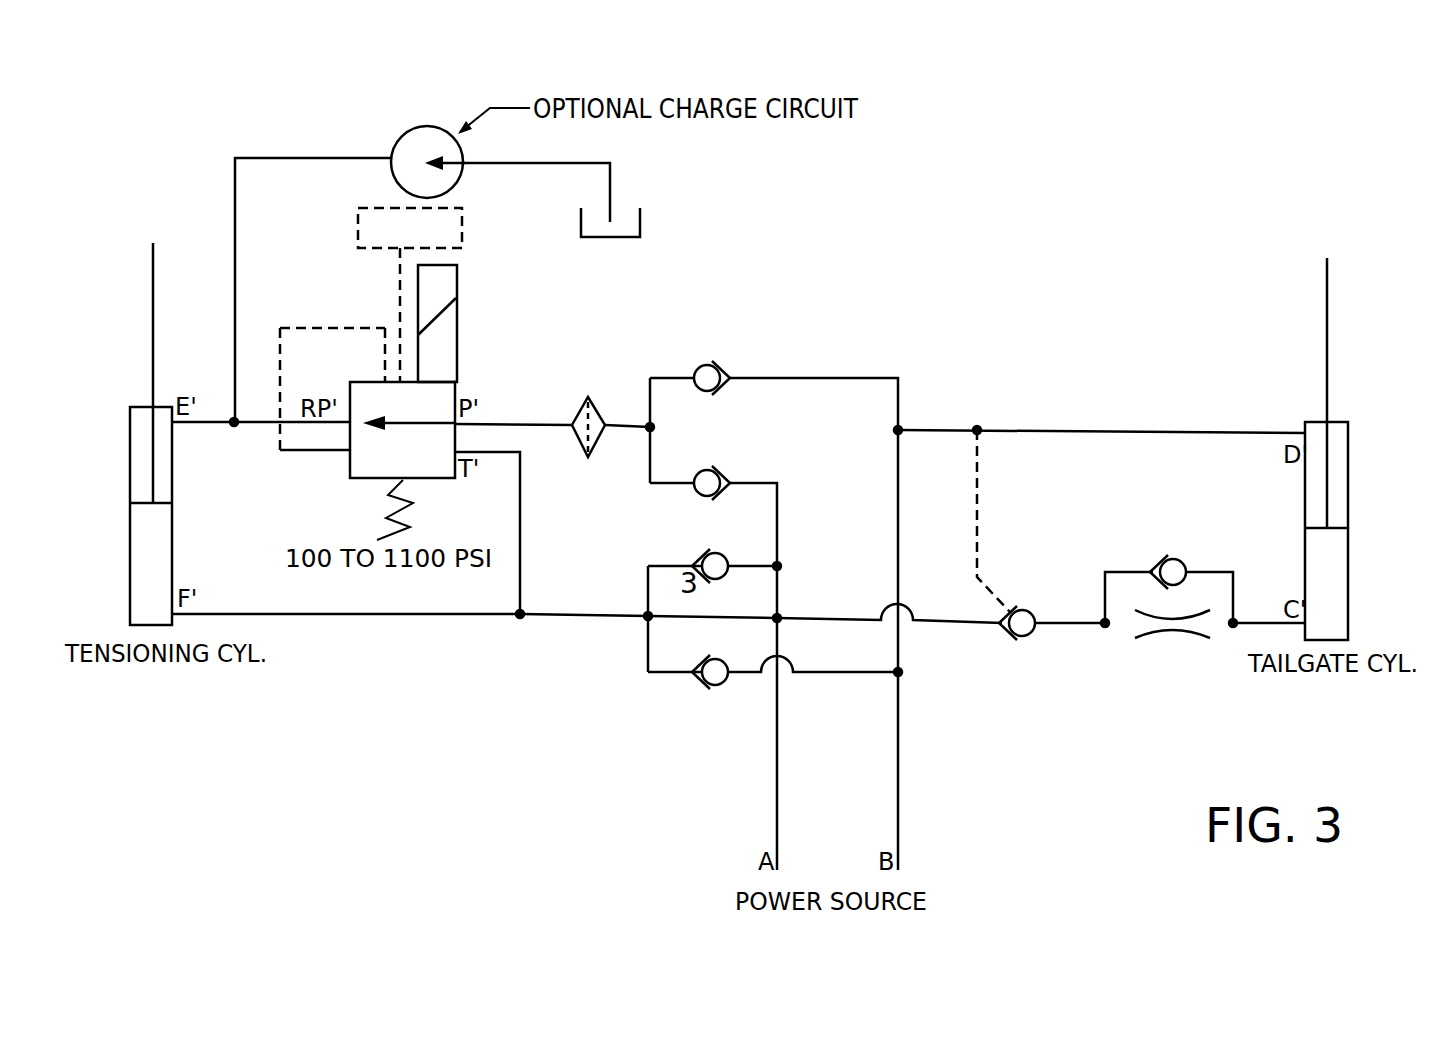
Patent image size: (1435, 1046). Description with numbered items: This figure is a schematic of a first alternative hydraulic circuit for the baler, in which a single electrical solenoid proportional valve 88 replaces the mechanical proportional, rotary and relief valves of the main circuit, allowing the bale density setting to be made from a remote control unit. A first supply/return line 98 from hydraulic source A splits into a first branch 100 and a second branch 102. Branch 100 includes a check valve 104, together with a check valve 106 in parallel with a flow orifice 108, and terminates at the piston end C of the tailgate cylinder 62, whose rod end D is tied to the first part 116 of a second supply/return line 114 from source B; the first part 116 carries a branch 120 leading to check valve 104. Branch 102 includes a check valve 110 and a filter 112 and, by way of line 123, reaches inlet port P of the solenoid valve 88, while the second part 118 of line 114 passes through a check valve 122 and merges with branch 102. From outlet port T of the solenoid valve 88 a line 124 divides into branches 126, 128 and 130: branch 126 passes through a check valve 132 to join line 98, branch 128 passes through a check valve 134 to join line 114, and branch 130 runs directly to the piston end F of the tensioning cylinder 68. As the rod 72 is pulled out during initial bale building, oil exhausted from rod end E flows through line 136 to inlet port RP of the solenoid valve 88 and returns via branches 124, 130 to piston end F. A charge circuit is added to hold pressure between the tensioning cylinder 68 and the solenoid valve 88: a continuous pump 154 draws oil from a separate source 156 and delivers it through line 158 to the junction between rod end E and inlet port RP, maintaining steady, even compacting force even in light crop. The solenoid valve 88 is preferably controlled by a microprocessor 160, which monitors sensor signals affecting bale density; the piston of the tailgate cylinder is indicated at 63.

The continuous pump 154 is at (441, 128).
The separate source 156 is at (642, 232).
The line 158 is at (233, 195).
The microprocessor 160 is at (462, 227).
The solenoid proportional valve 88 is at (463, 330).
The tensioning cylinder 68 is at (138, 567).
The rod 72 is at (167, 445).
The line 136 is at (217, 423).
The conduit 123 is at (518, 422).
The filter 112 is at (595, 402).
The line 124 is at (522, 587).
The branch 130 is at (458, 618).
The check valve 122 is at (728, 365).
The second part 118 is at (866, 377).
The check valve 110 is at (720, 470).
The second branch 102 is at (780, 517).
The check valve 132 is at (707, 555).
The branch 126 is at (753, 572).
The branch 128 is at (662, 675).
The check valve 134 is at (722, 687).
The second supply/return line 114 is at (782, 790).
The first supply/return line 98 is at (905, 800).
The first branch 100 is at (1085, 630).
The check valve 104 is at (1025, 600).
The first part 116 is at (1137, 430).
The branch 120 is at (980, 493).
The check valve 106 is at (1162, 557).
The flow orifice 108 is at (1187, 638).
The tailgate cylinder 62 is at (1328, 582).
The tailgate cylinder piston 63 is at (1318, 477).